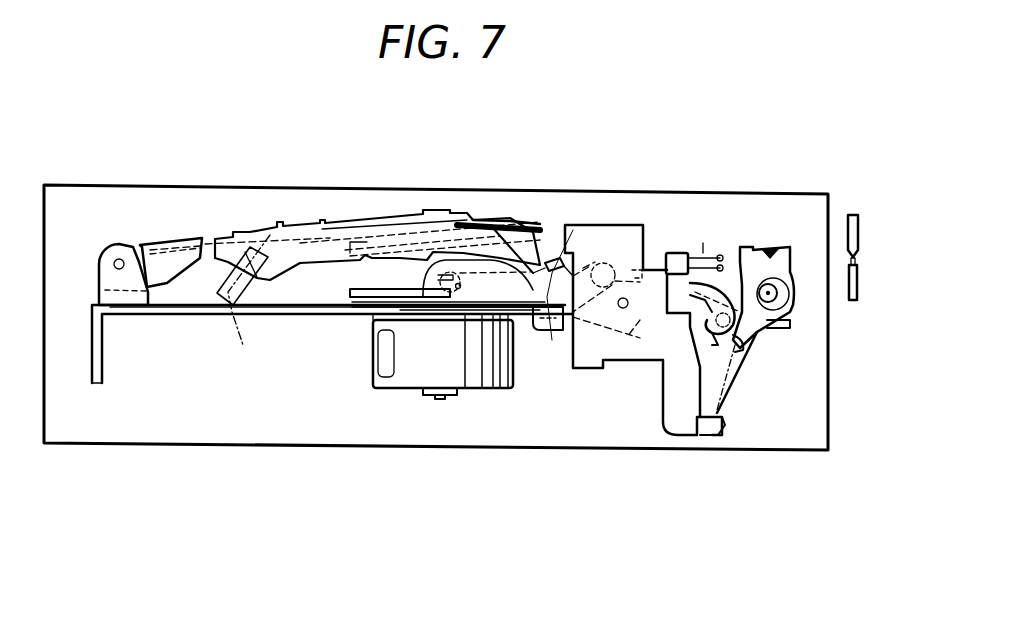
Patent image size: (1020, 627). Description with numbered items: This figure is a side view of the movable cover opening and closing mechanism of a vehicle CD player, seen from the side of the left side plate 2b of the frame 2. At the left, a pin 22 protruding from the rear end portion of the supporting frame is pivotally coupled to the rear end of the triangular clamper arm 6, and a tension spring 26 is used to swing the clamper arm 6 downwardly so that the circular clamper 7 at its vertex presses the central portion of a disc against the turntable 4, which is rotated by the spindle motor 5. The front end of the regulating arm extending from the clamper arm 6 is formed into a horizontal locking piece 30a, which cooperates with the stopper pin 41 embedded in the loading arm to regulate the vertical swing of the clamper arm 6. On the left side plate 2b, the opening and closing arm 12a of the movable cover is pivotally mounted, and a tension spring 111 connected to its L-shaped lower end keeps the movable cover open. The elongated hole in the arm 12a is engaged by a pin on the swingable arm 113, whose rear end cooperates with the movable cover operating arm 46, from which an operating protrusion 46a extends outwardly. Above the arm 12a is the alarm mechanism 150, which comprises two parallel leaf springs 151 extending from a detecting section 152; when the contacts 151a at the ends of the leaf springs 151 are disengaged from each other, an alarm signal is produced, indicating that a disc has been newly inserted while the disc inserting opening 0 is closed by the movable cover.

The pin 22 is at (119, 262).
The clamper arm 6 is at (170, 244).
The frame 2 is at (270, 185).
The tension spring 26 is at (249, 305).
The clamper 7 is at (520, 224).
The turntable 4 is at (345, 310).
The spindle motor 5 is at (410, 380).
The stopper pin 41 is at (548, 330).
The locking piece 30a is at (532, 275).
The left side plate 2b is at (598, 240).
The swingable arm 113 is at (672, 253).
The alarm mechanism 150 is at (692, 243).
The leaf springs 151 is at (719, 255).
The contacts 151a is at (730, 285).
The detecting section 152 is at (645, 240).
The operating protrusion 46a is at (552, 340).
The movable cover operating arm 46 is at (762, 333).
The tension spring 111 is at (728, 408).
The opening and closing arm 12a is at (742, 250).
The disc inserting opening 0 is at (864, 268).